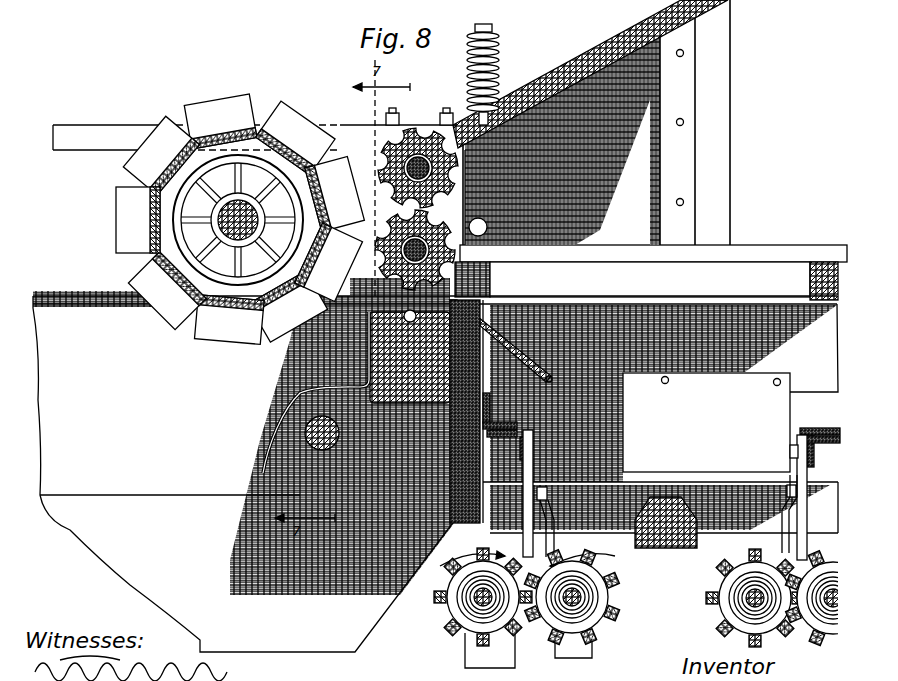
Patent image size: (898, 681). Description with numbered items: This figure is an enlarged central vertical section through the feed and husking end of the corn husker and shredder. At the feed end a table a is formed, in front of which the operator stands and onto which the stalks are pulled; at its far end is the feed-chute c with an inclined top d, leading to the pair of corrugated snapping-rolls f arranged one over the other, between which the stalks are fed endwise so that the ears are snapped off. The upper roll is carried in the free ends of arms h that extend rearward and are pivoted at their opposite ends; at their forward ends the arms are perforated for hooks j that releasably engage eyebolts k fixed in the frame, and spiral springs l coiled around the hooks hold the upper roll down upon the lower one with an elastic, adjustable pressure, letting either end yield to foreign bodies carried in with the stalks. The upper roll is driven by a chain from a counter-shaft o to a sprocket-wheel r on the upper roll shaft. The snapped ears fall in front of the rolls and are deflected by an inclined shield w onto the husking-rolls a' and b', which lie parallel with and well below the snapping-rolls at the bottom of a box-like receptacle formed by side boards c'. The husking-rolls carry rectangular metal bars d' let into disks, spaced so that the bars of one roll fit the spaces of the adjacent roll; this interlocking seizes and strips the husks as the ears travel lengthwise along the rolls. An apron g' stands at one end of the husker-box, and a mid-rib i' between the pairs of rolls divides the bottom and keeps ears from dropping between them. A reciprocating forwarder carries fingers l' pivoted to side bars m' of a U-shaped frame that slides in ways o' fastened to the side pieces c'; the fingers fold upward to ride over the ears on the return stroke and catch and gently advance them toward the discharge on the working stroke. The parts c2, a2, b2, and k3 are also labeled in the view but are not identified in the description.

The table a is at (440, 434).
The feed-chute c is at (610, 122).
The inclined top d is at (590, 74).
The arms h is at (95, 127).
The hooks j is at (480, 192).
The eyebolts k is at (470, 230).
The spiral springs l is at (492, 74).
The sprocket-wheel r is at (427, 122).
The paddle plates c2 is at (242, 137).
The corrugated rolls f is at (372, 175).
The wheel b2 is at (180, 250).
The hub a2 is at (222, 211).
The inclined shield w is at (550, 300).
The side boards c' is at (425, 411).
The cord k3 is at (276, 445).
The counter-shaft o is at (343, 433).
The apron g' is at (706, 422).
The side bars m' is at (665, 431).
The ways o' is at (661, 419).
The fingers l' is at (665, 489).
The mid-rib i' is at (666, 539).
The husking-rolls a' is at (525, 608).
The rectangular metal bars d' is at (585, 603).
The husking-rolls b' is at (785, 575).